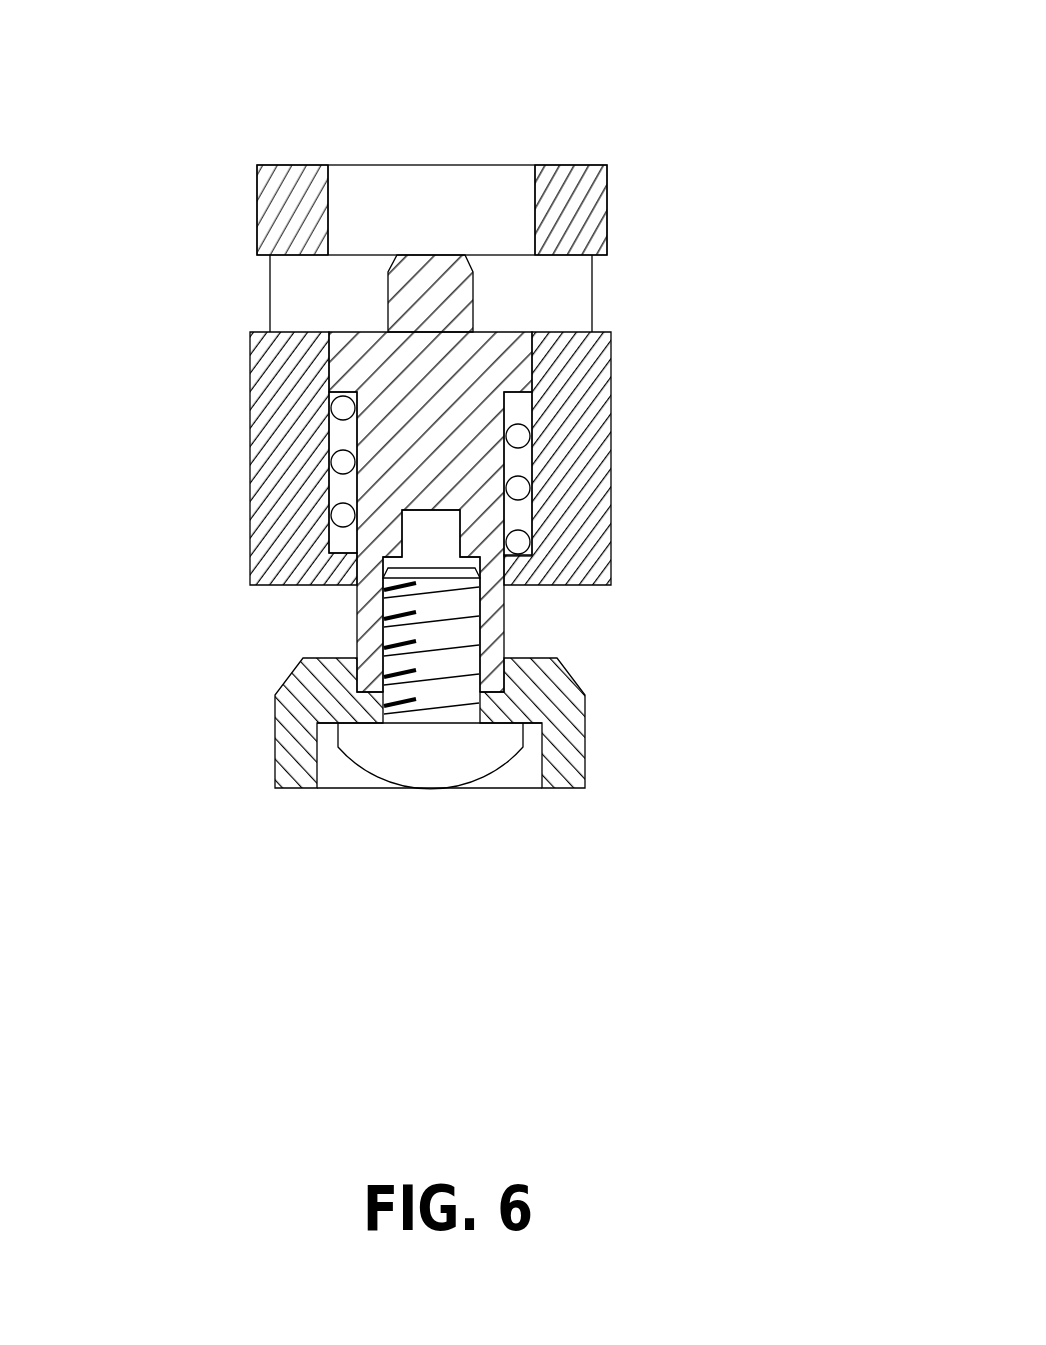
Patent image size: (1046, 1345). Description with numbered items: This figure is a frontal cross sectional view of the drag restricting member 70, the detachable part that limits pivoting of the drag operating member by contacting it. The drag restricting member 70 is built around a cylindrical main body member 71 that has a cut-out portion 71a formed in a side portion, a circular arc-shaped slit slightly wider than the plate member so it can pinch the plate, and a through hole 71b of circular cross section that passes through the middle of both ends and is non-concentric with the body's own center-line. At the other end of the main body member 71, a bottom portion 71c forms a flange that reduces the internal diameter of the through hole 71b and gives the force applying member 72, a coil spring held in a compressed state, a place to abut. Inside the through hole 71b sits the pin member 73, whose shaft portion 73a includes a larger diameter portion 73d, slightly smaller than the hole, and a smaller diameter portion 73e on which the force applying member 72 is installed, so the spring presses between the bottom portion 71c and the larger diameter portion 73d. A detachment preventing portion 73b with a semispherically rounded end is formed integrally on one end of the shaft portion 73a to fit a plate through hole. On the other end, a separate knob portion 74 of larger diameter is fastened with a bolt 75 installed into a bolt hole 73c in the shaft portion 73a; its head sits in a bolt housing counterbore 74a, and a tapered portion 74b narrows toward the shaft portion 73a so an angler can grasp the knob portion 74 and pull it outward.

The drag restricting member 70 is at (600, 123).
The main body member 71 is at (245, 147).
The cut-out portion 71a is at (290, 307).
The through hole 71b is at (330, 353).
The bottom portion 71c is at (515, 570).
The force applying member 72 is at (345, 463).
The pin member 73 is at (728, 323).
The shaft portion 73a is at (447, 468).
The detachment preventing portion 73b is at (442, 303).
The bolt hole 73c is at (398, 620).
The larger diameter portion 73d is at (352, 352).
The smaller diameter portion 73e is at (362, 485).
The knob portion 74 is at (607, 773).
The bolt housing counterbore 74a is at (325, 728).
The tapered portion 74b is at (302, 666).
The bolt 75 is at (422, 772).